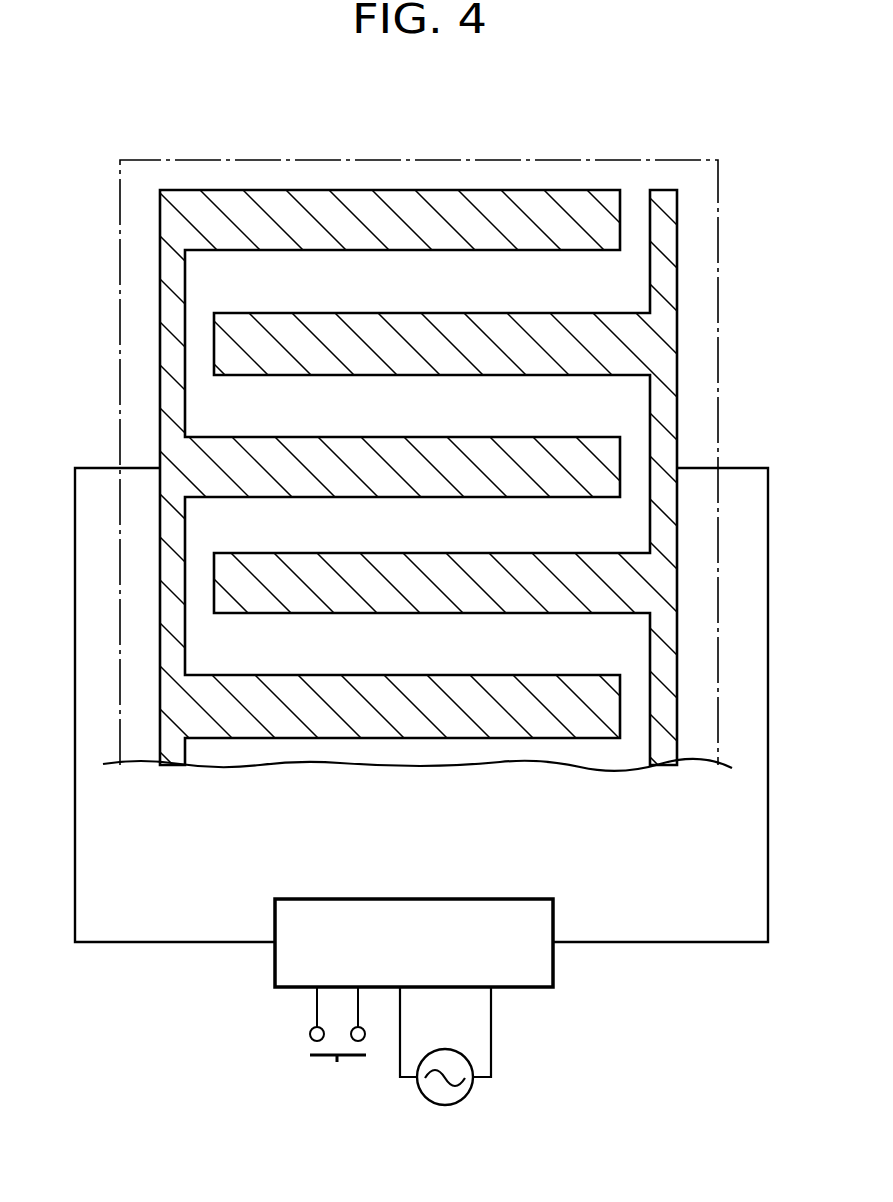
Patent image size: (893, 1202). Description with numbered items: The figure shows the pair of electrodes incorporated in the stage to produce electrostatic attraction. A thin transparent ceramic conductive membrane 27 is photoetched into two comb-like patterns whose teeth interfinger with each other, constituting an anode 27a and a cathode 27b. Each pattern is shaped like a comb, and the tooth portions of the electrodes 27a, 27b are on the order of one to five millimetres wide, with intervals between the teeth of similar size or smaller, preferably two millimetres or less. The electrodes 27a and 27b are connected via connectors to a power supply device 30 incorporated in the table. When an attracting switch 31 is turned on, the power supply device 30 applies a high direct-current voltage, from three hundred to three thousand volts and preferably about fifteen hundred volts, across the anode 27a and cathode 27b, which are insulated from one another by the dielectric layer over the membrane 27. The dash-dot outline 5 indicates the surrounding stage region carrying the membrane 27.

The substrate / panel 5 is at (390, 160).
The conductive membrane 27 is at (530, 170).
The anode 27a is at (170, 292).
The cathode 27b is at (668, 302).
The power supply device 30 is at (534, 988).
The attracting switch 31 is at (323, 1058).